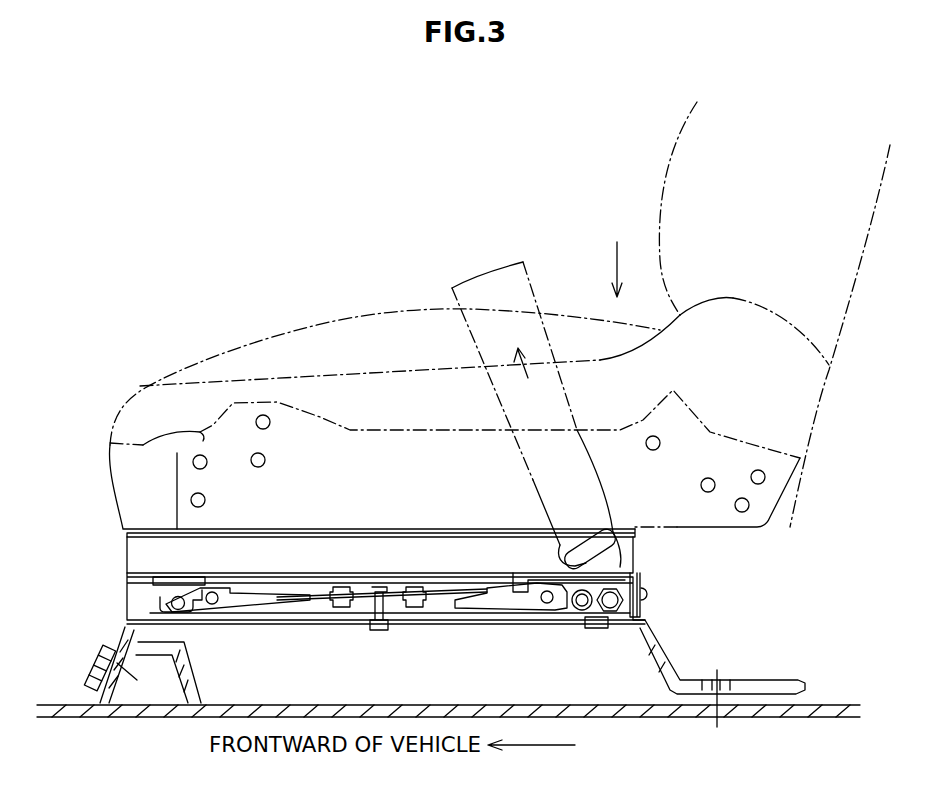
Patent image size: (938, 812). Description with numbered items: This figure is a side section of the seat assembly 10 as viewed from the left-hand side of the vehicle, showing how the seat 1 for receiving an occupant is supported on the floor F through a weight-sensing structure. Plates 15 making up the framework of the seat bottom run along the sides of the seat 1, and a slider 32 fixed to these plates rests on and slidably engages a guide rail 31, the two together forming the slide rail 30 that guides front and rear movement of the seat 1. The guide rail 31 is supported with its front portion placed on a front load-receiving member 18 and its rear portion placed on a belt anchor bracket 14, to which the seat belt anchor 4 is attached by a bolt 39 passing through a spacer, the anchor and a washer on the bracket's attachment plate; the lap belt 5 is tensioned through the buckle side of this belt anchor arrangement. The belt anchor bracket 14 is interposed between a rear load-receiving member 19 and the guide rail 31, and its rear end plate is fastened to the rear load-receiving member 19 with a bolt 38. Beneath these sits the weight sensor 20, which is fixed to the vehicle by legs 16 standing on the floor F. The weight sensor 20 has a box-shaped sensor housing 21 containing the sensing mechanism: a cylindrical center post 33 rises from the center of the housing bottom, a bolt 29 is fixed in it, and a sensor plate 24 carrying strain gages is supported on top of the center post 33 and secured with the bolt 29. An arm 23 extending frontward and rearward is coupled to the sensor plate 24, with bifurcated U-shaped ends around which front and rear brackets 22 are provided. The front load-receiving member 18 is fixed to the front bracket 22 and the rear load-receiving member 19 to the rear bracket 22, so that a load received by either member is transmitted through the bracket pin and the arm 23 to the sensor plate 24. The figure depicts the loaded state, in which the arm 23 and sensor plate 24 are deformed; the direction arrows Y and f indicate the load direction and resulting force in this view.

The seat 1 is at (133, 403).
The seat assembly 10 is at (298, 252).
The lap belt 5 is at (500, 280).
The seat belt anchor 4 is at (562, 543).
The plates 15 is at (110, 442).
The slide rail 30 is at (52, 503).
The slider 32 is at (250, 527).
The guide rail 31 is at (140, 553).
The front load-receiving member 18 is at (153, 576).
The weight sensor 20 is at (108, 619).
The sensor housing 21 is at (513, 620).
The belt anchor bracket 14 is at (640, 573).
The bolt 38 is at (648, 593).
The rear load-receiving member 19 is at (640, 608).
The brackets 22 is at (180, 613).
The arm 23 is at (257, 596).
The sensor plate 24 is at (396, 587).
The center post 33 is at (365, 612).
The bolt 29 is at (376, 636).
The bolt 39 is at (613, 617).
The legs 16 is at (95, 690).
The floor F is at (265, 705).
The downward direction Y is at (616, 253).
The force direction f is at (530, 388).